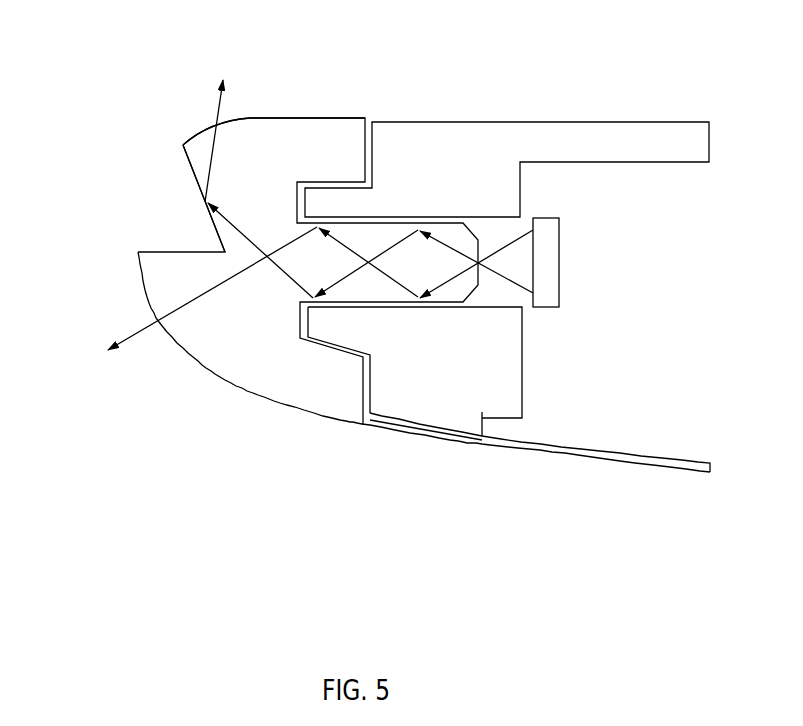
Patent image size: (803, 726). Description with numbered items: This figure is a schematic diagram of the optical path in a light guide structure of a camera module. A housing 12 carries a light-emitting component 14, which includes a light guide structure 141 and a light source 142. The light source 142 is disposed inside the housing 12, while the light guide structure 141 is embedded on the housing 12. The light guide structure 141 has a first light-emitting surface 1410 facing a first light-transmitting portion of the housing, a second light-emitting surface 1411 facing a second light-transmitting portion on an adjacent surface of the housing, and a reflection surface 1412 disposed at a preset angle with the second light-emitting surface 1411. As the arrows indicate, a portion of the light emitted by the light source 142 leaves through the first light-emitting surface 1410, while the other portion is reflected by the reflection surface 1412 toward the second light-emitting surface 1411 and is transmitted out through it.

The housing 12 is at (458, 137).
The light-emitting component 14 is at (370, 313).
The light guide structure 141 is at (370, 290).
The light source 142 is at (574, 376).
The first light-emitting surface 1410 is at (147, 298).
The second light-emitting surface 1411 is at (238, 118).
The reflection surface 1412 is at (195, 177).